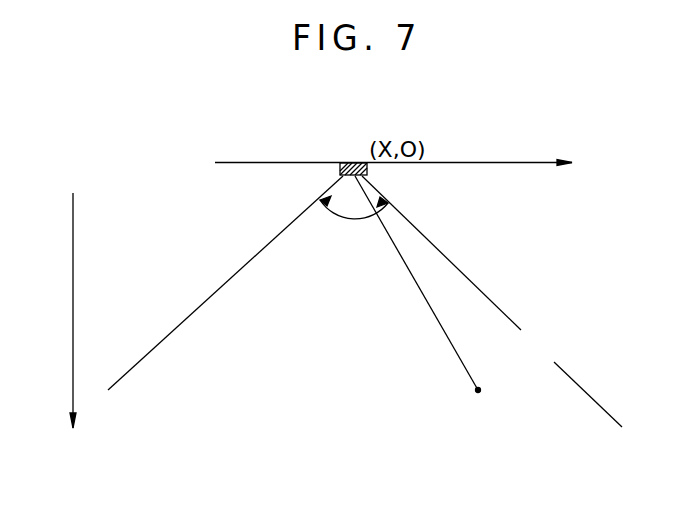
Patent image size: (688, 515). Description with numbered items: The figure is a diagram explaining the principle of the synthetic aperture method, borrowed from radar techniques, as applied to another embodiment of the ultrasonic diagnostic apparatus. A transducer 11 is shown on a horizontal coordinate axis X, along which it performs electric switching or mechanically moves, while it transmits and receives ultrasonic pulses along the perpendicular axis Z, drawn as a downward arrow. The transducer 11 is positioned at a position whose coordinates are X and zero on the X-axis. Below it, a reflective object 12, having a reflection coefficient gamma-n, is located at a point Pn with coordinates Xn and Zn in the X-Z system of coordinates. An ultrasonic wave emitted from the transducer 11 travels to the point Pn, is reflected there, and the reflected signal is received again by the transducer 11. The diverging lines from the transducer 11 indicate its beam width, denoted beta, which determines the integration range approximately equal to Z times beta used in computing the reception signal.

The transducer 11 is at (352, 163).
The reflective object 12 is at (478, 392).
The X-axis X is at (406, 165).
The Z-axis Z is at (73, 331).
The point Pn (Xn, Zn) Pn is at (492, 301).